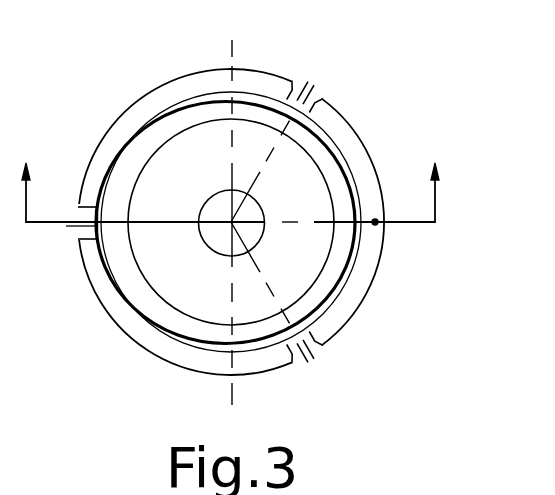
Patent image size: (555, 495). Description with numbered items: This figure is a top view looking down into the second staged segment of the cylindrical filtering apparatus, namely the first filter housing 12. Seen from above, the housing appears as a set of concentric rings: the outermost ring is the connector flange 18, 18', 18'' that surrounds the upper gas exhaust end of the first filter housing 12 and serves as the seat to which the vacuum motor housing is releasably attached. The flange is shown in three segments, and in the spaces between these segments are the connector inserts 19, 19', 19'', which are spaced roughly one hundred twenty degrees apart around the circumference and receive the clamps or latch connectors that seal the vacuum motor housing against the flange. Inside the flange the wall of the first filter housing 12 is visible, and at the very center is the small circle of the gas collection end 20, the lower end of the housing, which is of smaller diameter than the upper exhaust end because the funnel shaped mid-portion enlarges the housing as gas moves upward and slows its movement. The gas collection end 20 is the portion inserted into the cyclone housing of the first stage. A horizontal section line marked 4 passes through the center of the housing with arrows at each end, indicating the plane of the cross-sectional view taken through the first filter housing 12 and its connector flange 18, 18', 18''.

The first filter housing 12 is at (319, 266).
The connector flange 18 is at (170, 138).
The connector flange 18' is at (370, 216).
The connector flange 18'' is at (185, 325).
The connector insert 19 is at (48, 246).
The connector insert 19' is at (337, 63).
The connector insert 19'' is at (358, 373).
The gas collection end 20 is at (208, 246).
The section line 4- 4 is at (231, 169).